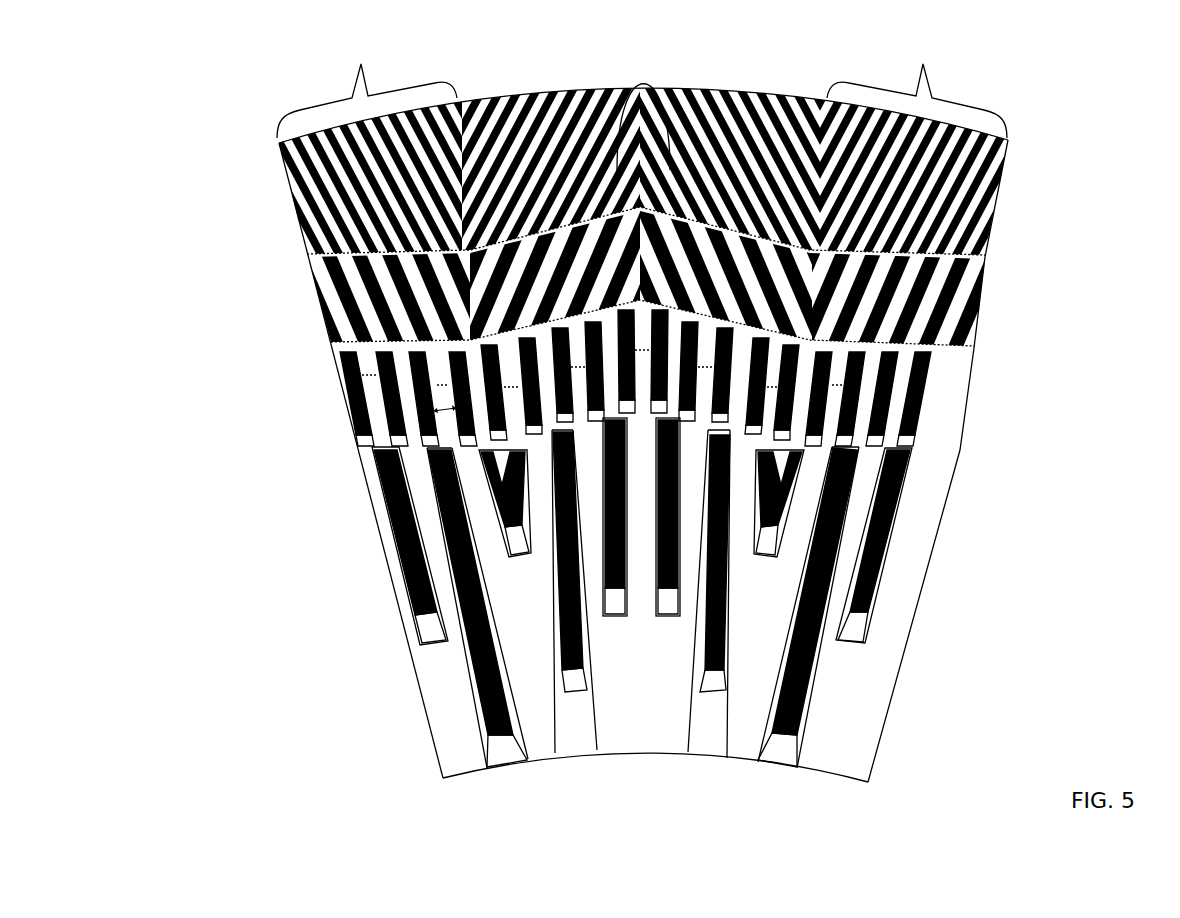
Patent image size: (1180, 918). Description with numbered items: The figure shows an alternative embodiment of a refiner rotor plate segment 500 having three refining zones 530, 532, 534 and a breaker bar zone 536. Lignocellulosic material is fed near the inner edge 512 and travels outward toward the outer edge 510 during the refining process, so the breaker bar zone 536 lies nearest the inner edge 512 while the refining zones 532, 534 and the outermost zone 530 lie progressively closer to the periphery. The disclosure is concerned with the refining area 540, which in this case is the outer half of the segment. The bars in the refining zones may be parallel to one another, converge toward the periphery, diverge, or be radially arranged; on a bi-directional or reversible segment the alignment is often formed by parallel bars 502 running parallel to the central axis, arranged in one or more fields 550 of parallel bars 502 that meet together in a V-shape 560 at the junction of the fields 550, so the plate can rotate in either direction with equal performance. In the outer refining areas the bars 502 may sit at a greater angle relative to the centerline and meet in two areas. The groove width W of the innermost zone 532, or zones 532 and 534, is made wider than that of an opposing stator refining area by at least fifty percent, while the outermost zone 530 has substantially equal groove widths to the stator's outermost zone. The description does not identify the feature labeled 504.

The rotor plate segment 500 is at (265, 146).
The parallel bars 502 is at (352, 389).
The trace width 504 is at (373, 392).
The outer edge 510 is at (689, 95).
The inner edge 512 is at (643, 752).
The refining zone 530 is at (985, 257).
The refining zone 532 is at (974, 348).
The refining zone 534 is at (960, 450).
The breaker bar zone 536 is at (960, 450).
The refining area 540 is at (1008, 140).
The field of parallel bars 550 is at (642, 87).
The V-shape 560 is at (641, 84).